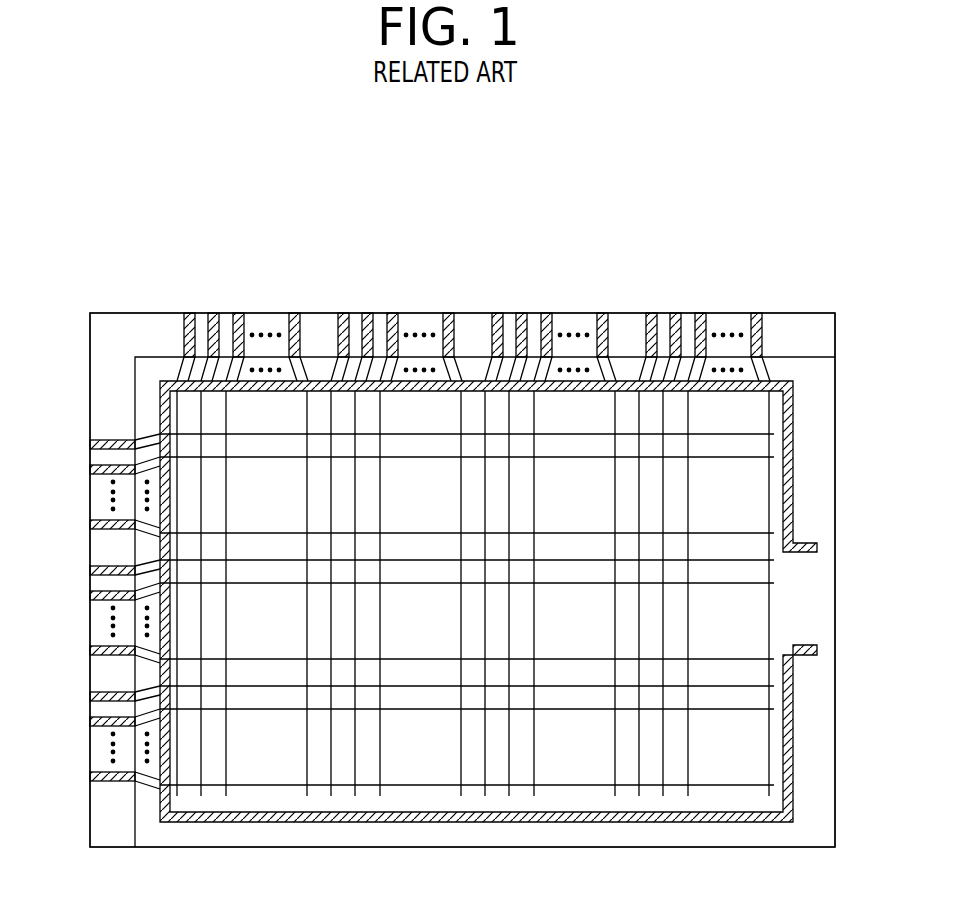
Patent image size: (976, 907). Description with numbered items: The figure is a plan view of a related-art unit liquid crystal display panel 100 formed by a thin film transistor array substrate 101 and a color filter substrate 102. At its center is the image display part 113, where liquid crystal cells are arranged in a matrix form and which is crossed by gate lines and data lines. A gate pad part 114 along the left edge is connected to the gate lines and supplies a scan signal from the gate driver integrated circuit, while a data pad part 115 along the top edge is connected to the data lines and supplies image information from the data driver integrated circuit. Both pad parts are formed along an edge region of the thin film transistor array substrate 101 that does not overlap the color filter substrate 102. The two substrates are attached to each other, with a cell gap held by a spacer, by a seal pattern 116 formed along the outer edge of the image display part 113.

The liquid crystal display panel 100 is at (118, 296).
The thin film transistor array substrate 101 is at (820, 334).
The color filter substrate 102 is at (820, 397).
The image display part 113 is at (437, 506).
The gate pad part 114 is at (78, 790).
The data pad part 115 is at (765, 293).
The seal pattern 116 is at (790, 470).